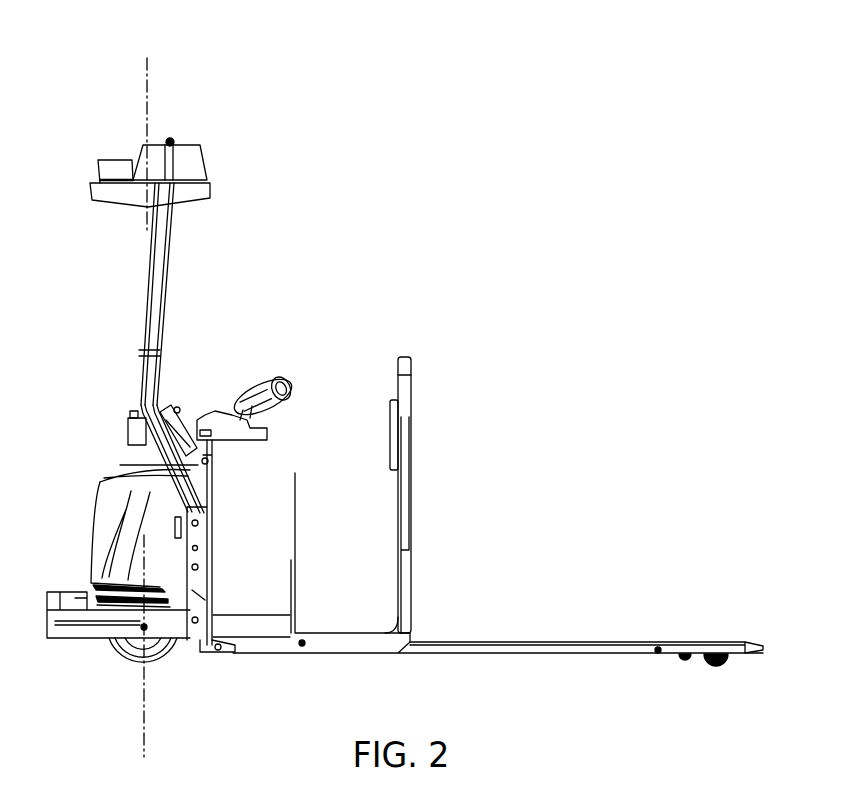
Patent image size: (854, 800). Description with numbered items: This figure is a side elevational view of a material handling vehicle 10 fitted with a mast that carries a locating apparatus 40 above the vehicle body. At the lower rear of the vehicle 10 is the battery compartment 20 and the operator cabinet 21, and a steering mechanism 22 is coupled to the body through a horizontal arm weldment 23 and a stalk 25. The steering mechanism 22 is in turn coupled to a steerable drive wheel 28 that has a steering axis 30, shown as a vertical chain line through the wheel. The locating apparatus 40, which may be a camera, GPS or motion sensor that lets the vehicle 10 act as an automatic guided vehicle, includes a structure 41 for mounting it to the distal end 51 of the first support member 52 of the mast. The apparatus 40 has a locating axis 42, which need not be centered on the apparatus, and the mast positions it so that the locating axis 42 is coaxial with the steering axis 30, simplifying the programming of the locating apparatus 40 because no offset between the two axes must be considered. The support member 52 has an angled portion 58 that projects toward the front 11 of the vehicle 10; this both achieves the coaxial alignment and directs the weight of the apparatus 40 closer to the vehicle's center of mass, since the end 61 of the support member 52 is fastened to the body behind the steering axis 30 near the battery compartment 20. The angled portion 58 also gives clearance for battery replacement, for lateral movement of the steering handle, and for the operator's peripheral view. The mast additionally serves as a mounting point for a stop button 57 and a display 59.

The material handling vehicle 10 is at (418, 216).
The front 11 is at (92, 525).
The battery compartment 20 is at (246, 593).
The operator cabinet 21 is at (332, 603).
The steering mechanism 22 is at (277, 366).
The horizontal arm weldment 23 is at (245, 434).
The stalk 25 is at (212, 461).
The steerable drive wheel 28 is at (117, 657).
The steering axis 30 is at (146, 742).
The locating apparatus 40 is at (117, 145).
The structure 41 is at (193, 163).
The locating axis 42 is at (150, 73).
The distal end 51 is at (164, 229).
The first support member 52 is at (172, 297).
The stop button 57 is at (131, 414).
The angled portion 58 is at (164, 455).
The display 59 is at (171, 416).
The end 61 is at (198, 597).